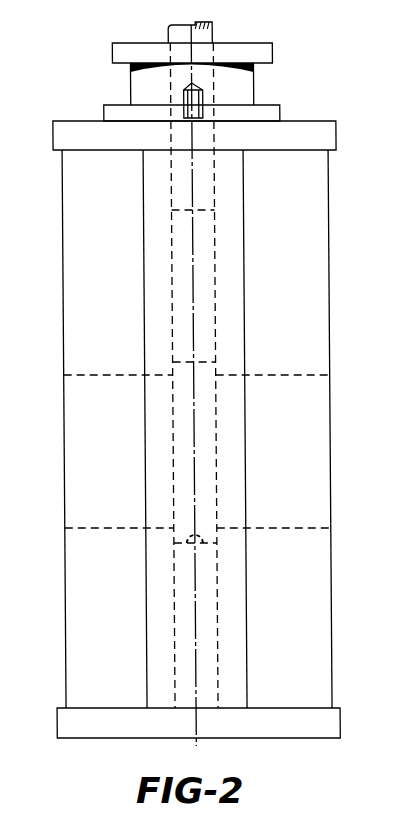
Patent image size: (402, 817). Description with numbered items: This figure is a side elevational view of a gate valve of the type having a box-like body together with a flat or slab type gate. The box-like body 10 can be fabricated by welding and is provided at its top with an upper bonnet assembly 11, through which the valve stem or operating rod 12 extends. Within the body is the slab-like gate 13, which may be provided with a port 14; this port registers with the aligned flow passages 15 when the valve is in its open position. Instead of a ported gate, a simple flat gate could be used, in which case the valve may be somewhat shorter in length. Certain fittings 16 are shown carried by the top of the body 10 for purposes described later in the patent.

The box-like body 10 is at (66, 290).
The upper bonnet assembly 11 is at (131, 81).
The valve stem 12 is at (216, 39).
The slab-like gate 13 is at (172, 546).
The port 14 is at (184, 211).
The flow passages 15 is at (80, 376).
The fittings 16 is at (202, 98).